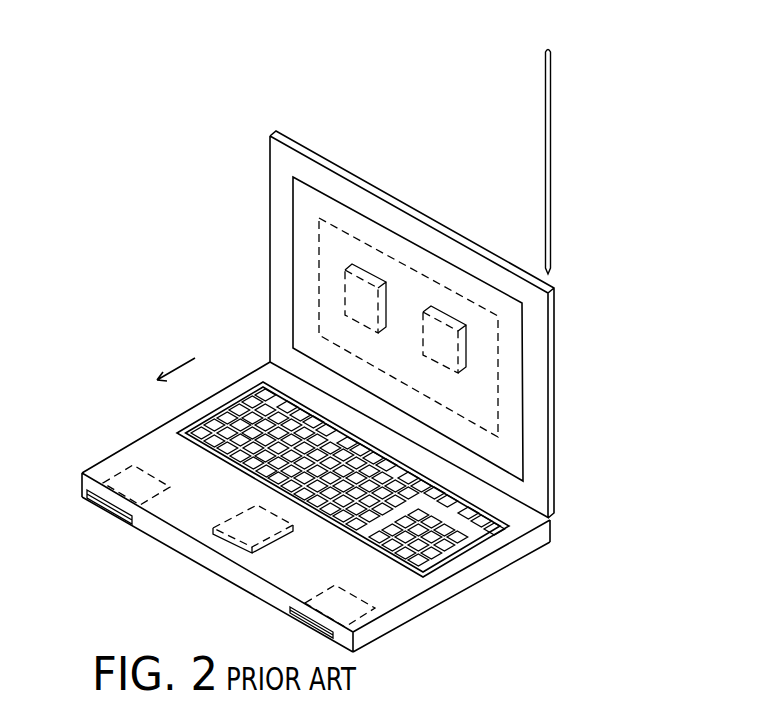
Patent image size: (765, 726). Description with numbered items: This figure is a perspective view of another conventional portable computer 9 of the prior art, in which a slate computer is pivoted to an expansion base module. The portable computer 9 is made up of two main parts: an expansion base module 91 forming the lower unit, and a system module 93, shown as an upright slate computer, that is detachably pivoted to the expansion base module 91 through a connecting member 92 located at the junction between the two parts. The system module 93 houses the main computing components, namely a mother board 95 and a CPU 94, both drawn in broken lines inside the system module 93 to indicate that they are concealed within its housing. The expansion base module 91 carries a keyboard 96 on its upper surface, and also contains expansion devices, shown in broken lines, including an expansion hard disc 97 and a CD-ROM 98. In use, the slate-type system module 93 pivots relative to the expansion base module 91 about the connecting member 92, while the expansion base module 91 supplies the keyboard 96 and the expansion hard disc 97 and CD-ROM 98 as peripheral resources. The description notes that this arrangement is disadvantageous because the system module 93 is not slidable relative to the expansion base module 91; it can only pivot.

The portable computer 9 is at (139, 338).
The expansion base module 91 is at (473, 578).
The connecting member 92 is at (551, 521).
The system module 93 is at (553, 383).
The CPU 94 is at (445, 308).
The mother board 95 is at (318, 250).
The keyboard 96 is at (242, 408).
The expansion hard disc 97 is at (248, 520).
The CD-ROM 98 is at (118, 467).